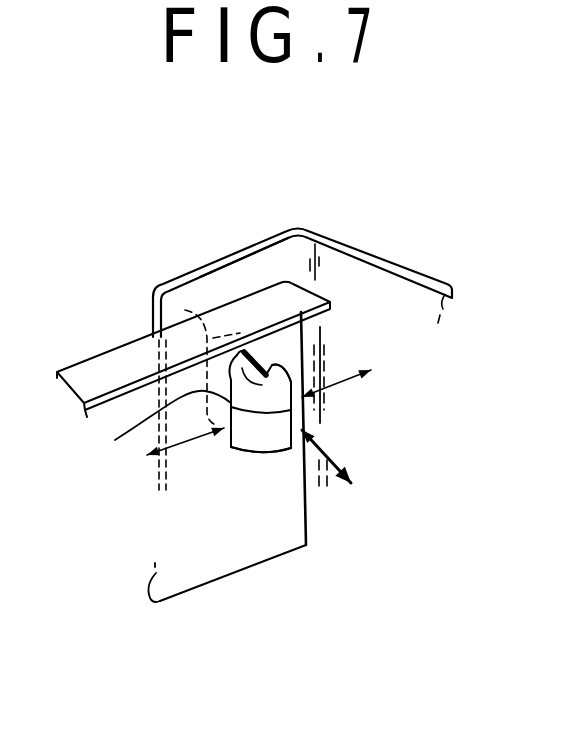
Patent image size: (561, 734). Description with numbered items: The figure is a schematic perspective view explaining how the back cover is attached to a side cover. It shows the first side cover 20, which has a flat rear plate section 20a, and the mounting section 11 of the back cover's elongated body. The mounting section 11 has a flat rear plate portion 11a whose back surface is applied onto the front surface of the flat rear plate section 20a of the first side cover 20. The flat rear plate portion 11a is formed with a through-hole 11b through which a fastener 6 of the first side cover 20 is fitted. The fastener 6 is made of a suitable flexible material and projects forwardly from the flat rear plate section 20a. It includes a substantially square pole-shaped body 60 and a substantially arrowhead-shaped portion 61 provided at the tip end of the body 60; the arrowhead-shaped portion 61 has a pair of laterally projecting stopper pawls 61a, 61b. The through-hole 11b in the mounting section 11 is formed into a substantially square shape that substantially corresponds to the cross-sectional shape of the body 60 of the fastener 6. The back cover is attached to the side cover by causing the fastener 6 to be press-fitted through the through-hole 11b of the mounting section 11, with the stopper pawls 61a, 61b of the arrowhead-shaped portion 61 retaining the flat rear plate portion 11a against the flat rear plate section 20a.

The fastener 6 is at (258, 450).
The mounting section 11 is at (96, 362).
The flat rear plate portion 11a is at (222, 548).
The through-hole 11b is at (267, 373).
The first side cover 20 is at (275, 237).
The flat rear plate section 20a is at (238, 278).
The substantially square pole-shaped body 60 is at (185, 310).
The substantially arrowhead-shaped portion 61 is at (272, 407).
The stopper pawl 61a is at (143, 450).
The stopper pawl 61b is at (284, 375).